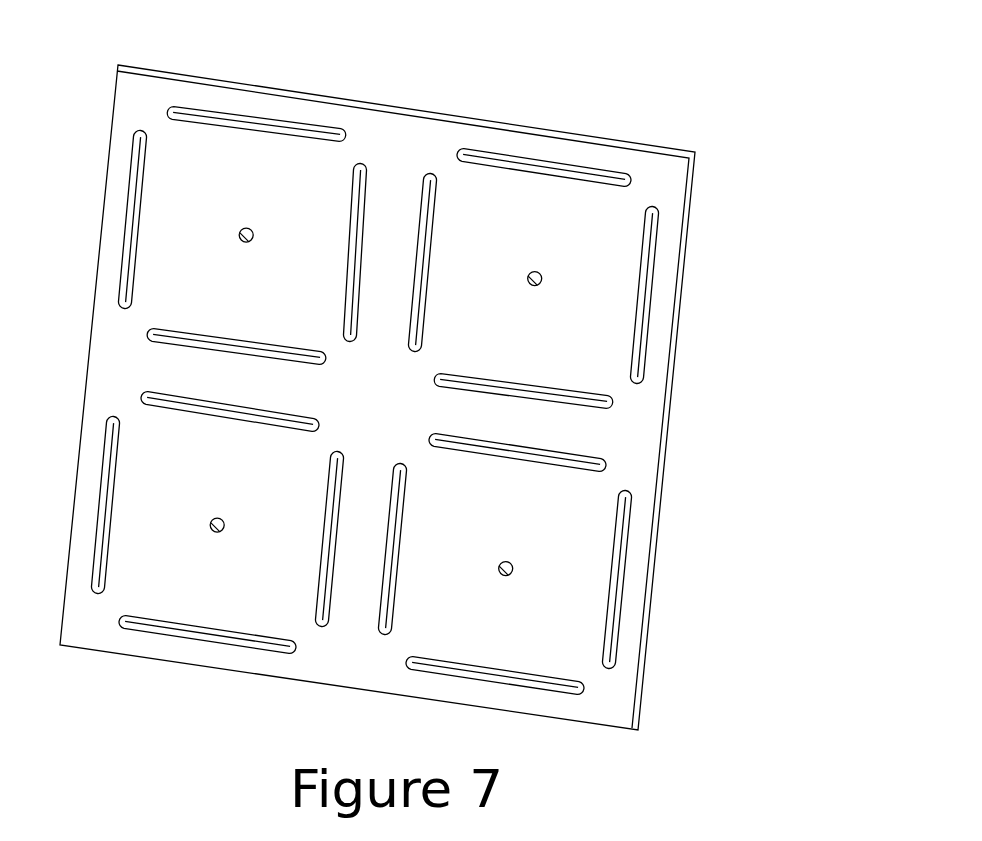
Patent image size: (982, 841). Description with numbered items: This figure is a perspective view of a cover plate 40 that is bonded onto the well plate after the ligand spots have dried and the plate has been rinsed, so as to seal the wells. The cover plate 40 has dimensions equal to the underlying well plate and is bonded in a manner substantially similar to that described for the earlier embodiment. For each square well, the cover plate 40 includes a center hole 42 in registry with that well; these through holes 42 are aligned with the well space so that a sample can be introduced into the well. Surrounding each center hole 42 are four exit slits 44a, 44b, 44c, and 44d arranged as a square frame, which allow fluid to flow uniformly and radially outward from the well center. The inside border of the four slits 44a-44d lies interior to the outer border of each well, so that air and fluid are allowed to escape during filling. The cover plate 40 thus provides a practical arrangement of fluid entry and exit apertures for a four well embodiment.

The cover plate 40 is at (657, 600).
The center hole 42 is at (508, 558).
The exit slit 44a is at (429, 173).
The exit slit 44b is at (552, 160).
The exit slit 44c is at (643, 242).
The exit slit 44d is at (612, 408).